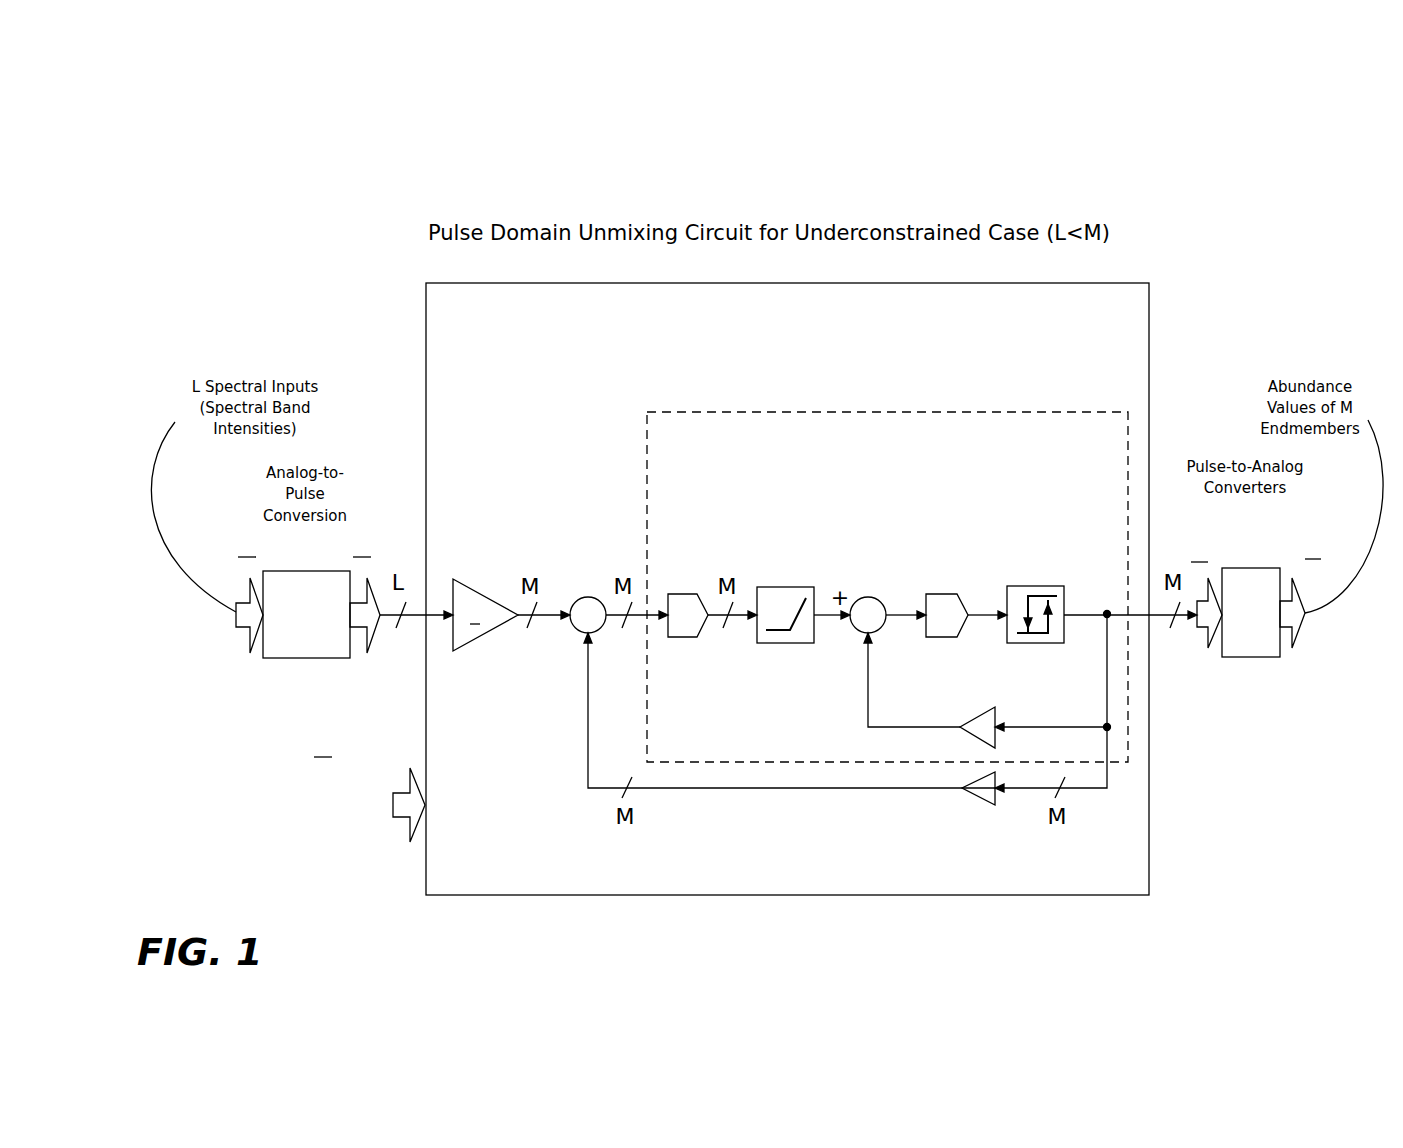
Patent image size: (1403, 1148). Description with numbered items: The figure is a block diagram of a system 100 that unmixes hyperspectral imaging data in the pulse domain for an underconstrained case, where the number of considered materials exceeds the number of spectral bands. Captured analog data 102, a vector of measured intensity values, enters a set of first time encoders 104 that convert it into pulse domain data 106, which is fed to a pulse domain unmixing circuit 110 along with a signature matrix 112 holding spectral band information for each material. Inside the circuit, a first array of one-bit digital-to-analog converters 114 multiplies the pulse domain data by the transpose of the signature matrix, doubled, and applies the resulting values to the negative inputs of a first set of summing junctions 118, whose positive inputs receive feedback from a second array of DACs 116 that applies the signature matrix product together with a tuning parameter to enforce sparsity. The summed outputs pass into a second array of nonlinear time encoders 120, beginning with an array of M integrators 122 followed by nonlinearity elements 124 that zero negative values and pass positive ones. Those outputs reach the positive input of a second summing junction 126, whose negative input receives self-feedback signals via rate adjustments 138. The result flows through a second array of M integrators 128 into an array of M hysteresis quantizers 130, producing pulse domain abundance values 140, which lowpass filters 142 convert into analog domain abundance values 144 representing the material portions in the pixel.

The system 100 is at (194, 208).
The captured analog data 102 is at (240, 540).
The set of first time encoders 104 is at (282, 571).
The pulse domain data 106 is at (372, 535).
The pulse domain unmixing circuit 110 is at (1150, 336).
The signature matrix 112 is at (308, 740).
The first array of one-bit digital-to-analog converters 114 is at (468, 582).
The second array of DACs 116 is at (960, 788).
The first set of summing junctions 118 is at (590, 597).
The second array of nonlinear time encoders 120 is at (661, 411).
The array of M integrators 122 is at (690, 637).
The nonlinearity elements 124 is at (772, 587).
The second summing junction 126 is at (855, 633).
The second array of M integrators 128 is at (937, 637).
The array of M hysteresis quantizers 130 is at (1038, 586).
The rate adjustments 138 is at (975, 721).
The pulse domain abundance values 140 is at (1190, 540).
The lowpass filters 142 is at (1232, 568).
The analog domain abundance values 144 is at (1327, 535).